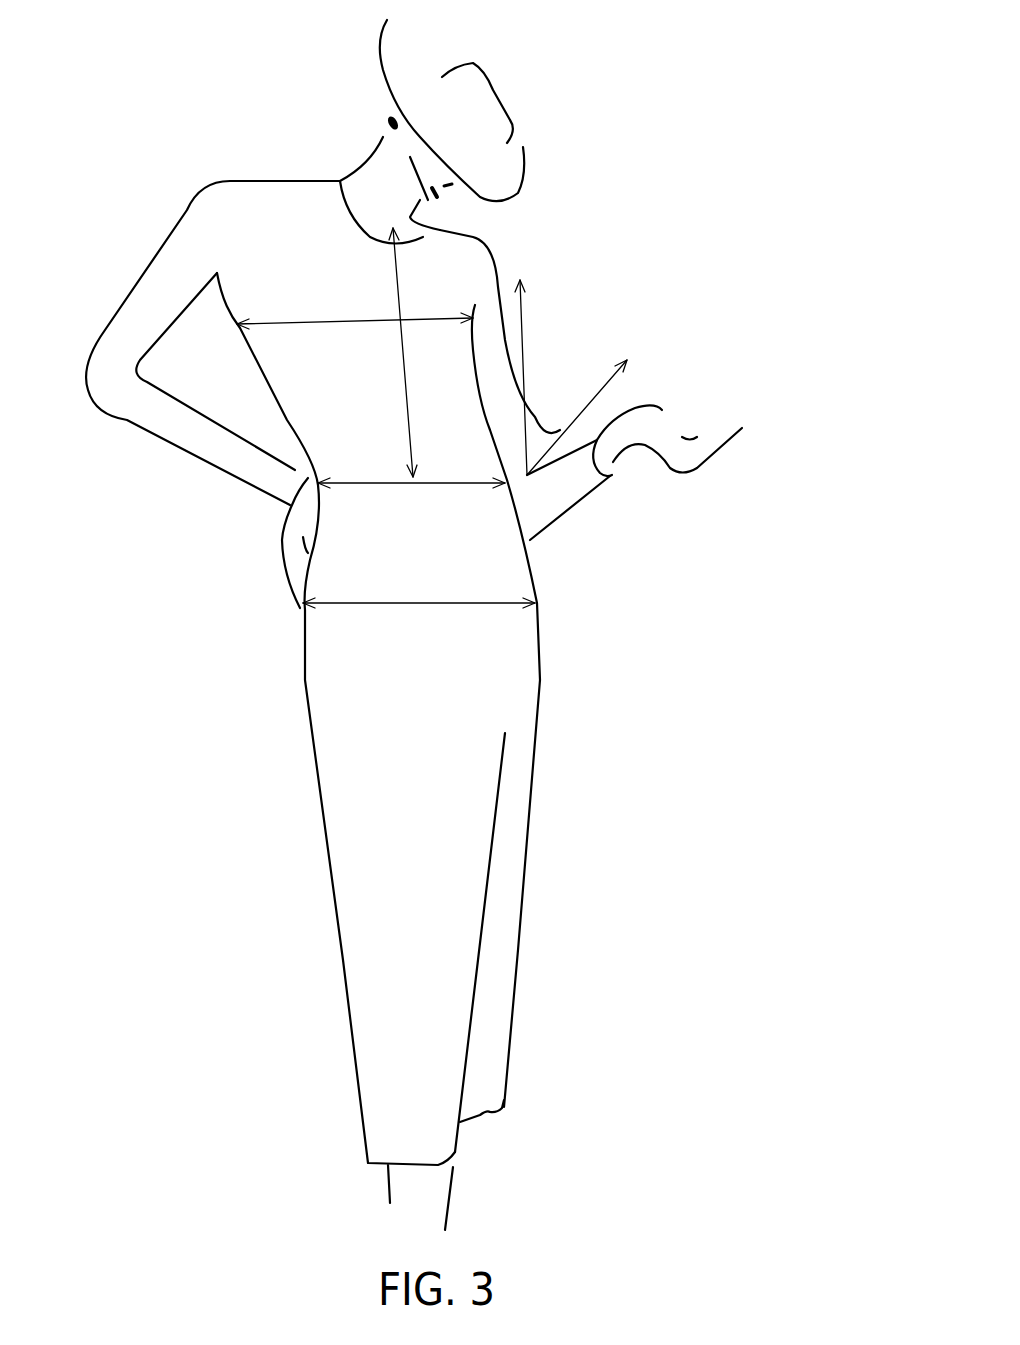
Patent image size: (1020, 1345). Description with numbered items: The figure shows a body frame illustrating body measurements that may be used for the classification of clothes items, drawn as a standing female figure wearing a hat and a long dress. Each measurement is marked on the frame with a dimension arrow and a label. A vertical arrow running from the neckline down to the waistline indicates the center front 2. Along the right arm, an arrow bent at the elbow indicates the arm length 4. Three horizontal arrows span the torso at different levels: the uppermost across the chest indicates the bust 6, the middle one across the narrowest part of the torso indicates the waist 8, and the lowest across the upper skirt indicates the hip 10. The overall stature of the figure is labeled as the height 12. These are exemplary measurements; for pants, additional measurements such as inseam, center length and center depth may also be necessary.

The center front 2 is at (407, 277).
The arm length 4 is at (655, 377).
The bust 6 is at (323, 317).
The waist 8 is at (481, 497).
The hip 10 is at (473, 607).
The height 12 is at (676, 119).